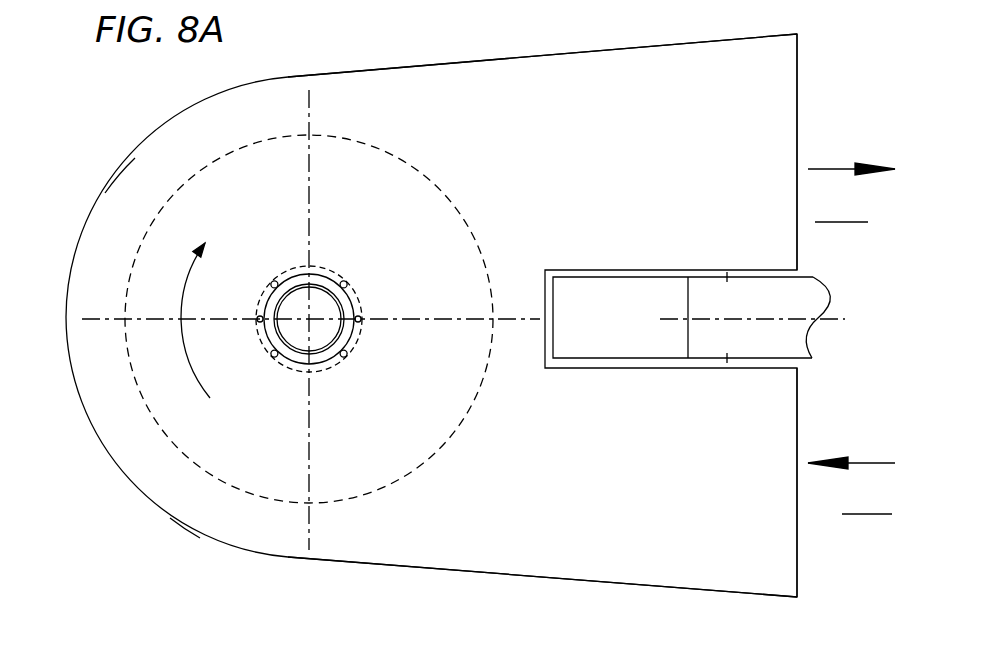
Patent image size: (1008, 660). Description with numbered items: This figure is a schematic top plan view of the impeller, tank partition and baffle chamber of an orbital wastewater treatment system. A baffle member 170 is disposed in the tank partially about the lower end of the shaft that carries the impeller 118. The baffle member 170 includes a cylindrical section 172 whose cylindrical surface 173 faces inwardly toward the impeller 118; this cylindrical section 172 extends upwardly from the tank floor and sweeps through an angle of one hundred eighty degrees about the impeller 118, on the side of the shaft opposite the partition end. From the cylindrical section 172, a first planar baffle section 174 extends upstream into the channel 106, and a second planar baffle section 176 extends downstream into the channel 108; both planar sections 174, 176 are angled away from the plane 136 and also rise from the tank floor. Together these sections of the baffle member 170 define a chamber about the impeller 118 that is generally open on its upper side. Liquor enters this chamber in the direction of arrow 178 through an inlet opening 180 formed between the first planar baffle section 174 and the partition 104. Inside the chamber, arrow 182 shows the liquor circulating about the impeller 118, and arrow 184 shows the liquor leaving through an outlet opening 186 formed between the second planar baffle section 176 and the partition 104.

The partition 104 is at (788, 292).
The channel 106 is at (869, 500).
The channel 108 is at (842, 208).
The impeller 118 is at (100, 323).
The plane 136 is at (833, 318).
The baffle member 170 is at (150, 503).
The cylindrical section 172 is at (183, 527).
The cylindrical surface 173 is at (118, 178).
The first planar baffle section 174 is at (582, 580).
The second planar baffle section 176 is at (565, 53).
The arrow 178 is at (868, 460).
The inlet opening 180 is at (798, 530).
The arrow 182 is at (193, 363).
The arrow 184 is at (836, 166).
The outlet opening 186 is at (797, 92).